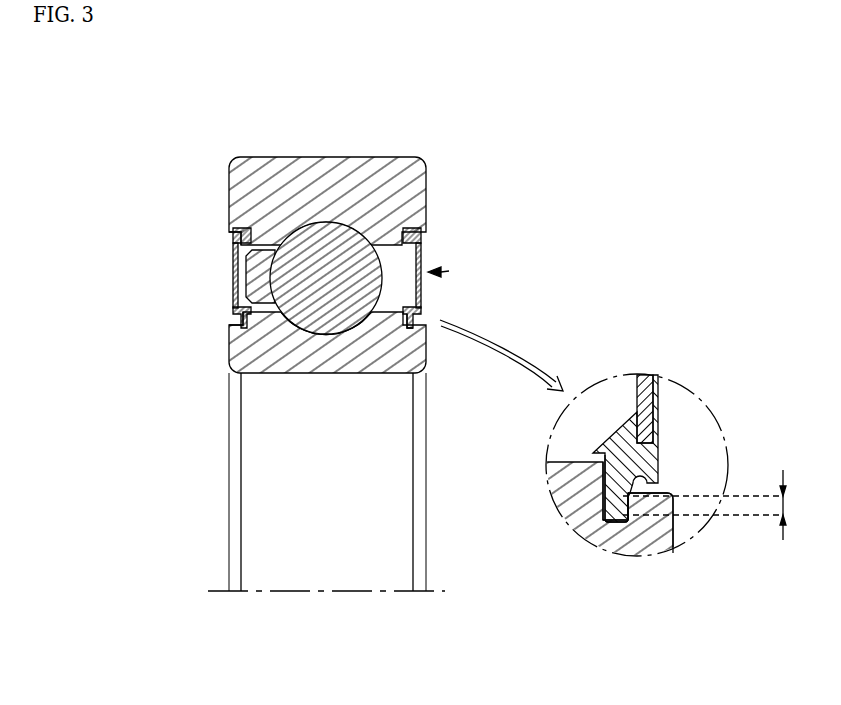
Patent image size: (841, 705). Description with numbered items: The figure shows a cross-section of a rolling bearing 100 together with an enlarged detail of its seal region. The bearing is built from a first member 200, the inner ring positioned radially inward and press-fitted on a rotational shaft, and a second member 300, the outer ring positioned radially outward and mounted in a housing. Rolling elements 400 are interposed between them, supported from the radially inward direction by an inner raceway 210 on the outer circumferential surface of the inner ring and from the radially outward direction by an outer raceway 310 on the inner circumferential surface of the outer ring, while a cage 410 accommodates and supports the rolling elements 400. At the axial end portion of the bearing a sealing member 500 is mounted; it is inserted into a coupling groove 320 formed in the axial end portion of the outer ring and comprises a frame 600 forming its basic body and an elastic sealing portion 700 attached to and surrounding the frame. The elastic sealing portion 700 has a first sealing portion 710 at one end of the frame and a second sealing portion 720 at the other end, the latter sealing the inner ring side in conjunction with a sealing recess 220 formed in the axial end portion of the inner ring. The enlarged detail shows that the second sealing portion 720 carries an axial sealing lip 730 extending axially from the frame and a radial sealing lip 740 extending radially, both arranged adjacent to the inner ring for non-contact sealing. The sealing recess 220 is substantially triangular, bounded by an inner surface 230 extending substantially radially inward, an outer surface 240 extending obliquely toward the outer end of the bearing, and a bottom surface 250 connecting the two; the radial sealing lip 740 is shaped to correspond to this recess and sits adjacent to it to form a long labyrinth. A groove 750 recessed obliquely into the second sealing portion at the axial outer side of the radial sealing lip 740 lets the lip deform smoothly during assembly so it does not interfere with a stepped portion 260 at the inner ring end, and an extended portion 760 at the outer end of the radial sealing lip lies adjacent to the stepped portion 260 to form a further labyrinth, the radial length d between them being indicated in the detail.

The rolling bearing 100 is at (226, 69).
The first member (inner ring) 200 is at (262, 365).
The inner raceway 210 is at (358, 330).
The sealing recess 220 is at (243, 328).
The inner surface 230 is at (603, 512).
The outer surface 240 is at (642, 533).
The bottom surface 250 is at (627, 533).
The stepped portion 260 is at (660, 480).
The second member (outer ring) 300 is at (407, 159).
The outer raceway 310 is at (320, 222).
The coupling groove 320 is at (247, 231).
The rolling elements 400 is at (345, 247).
The cage 410 is at (258, 272).
The sealing member 500 is at (448, 275).
The frame 600 is at (421, 255).
The elastic sealing portion 700 is at (421, 288).
The first sealing portion 710 is at (410, 232).
The second sealing portion 720 is at (418, 326).
The axial sealing lip 730 is at (612, 432).
The radial sealing lip 740 is at (676, 533).
The groove 750 is at (606, 478).
The extended portion 760 is at (656, 478).